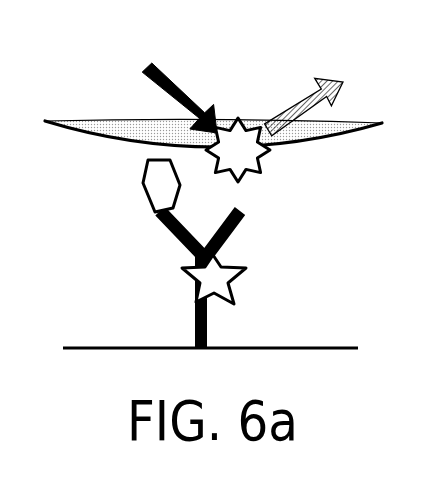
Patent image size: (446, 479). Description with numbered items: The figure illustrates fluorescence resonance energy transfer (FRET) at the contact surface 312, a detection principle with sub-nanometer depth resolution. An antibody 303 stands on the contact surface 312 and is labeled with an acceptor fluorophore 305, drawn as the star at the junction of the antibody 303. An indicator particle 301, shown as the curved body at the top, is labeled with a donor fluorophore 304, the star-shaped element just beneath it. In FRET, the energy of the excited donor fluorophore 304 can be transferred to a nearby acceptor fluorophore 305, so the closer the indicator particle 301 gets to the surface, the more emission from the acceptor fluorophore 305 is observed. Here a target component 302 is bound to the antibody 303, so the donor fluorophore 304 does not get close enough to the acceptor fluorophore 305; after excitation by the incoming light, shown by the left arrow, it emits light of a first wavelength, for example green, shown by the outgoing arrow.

The indicator particle 301 is at (98, 121).
The target component 302 is at (147, 182).
The antibody 303 is at (163, 229).
The donor fluorophore 304 is at (258, 168).
The acceptor fluorophore 305 is at (233, 294).
The contact surface 312 is at (87, 337).